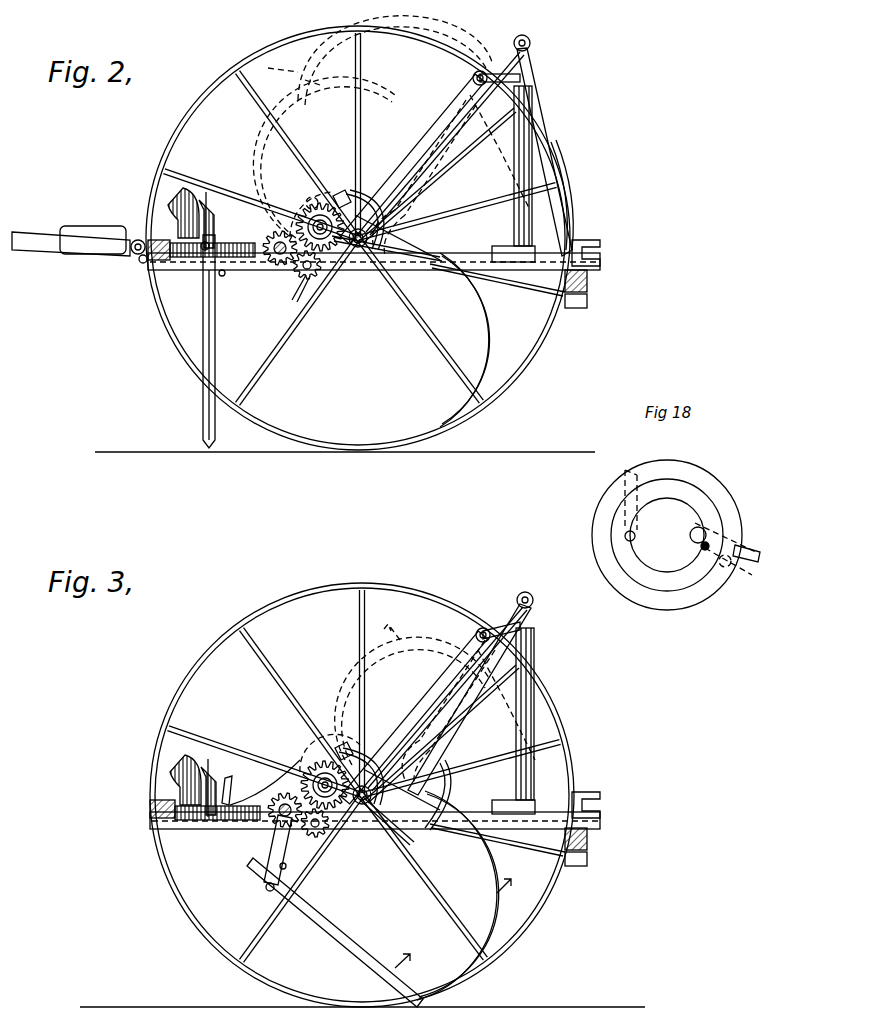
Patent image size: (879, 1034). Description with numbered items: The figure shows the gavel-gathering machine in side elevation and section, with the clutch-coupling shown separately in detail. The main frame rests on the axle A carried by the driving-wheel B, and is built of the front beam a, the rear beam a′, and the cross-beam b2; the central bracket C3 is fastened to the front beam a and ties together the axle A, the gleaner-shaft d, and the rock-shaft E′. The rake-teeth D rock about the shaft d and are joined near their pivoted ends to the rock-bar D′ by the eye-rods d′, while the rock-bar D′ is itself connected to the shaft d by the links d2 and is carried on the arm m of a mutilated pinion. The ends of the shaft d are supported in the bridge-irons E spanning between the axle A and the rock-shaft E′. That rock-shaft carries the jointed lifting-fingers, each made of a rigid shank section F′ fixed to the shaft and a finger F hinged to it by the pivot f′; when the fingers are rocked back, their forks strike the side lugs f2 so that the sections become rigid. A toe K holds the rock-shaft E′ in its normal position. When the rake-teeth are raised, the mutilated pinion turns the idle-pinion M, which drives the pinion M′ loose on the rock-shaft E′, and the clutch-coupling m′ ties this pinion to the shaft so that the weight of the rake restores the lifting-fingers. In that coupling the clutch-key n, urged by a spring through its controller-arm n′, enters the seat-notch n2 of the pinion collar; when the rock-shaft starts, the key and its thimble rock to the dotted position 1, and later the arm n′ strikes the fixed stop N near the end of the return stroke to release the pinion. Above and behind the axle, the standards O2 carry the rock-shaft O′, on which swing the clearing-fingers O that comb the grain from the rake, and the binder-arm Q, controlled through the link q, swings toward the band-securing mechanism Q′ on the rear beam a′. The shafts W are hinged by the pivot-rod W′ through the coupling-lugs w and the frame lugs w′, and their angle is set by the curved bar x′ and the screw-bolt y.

In FIG. 2, the driving-wheel B is at (358, 231).
In FIG. 3, the driving-wheel B is at (362, 787).
In FIG. 2, the shaft d is at (320, 227).
In FIG. 3, the shaft d is at (318, 785).
In FIG. 2, the shank section F′ is at (273, 248).
In FIG. 3, the shank section F′ is at (282, 829).
In FIG. 2, the rock-shaft E′ is at (294, 276).
In FIG. 3, the rock-shaft E′ is at (286, 835).
In FIG. 2, the idle-pinion M is at (301, 292).
In FIG. 3, the idle-pinion M is at (217, 818).
In FIG. 2, the pinion M′ is at (215, 234).
In FIG. 2, the cross-beam b2 is at (374, 267).
In FIG. 3, the cross-beam b2 is at (375, 823).
In FIG. 2, the front beam a is at (162, 239).
In FIG. 3, the front beam a is at (154, 809).
In FIG. 2, the rear beam a′ is at (517, 286).
In FIG. 3, the rear beam a′ is at (520, 845).
In FIG. 2, the shafts W is at (71, 233).
In FIG. 2, the pivot-rod W′ is at (103, 233).
In FIG. 2, the coupling-lugs w is at (133, 243).
In FIG. 2, the double lugs w′ is at (143, 263).
In FIG. 2, the finger F is at (197, 341).
In FIG. 3, the finger F is at (335, 932).
In FIG. 2, the pivot f′ is at (210, 244).
In FIG. 3, the pivot f′ is at (266, 888).
In FIG. 2, the side lugs f2 is at (224, 276).
In FIG. 3, the side lugs f2 is at (289, 874).
In FIG. 2, the curved bar x′ is at (186, 218).
In FIG. 3, the curved bar x′ is at (188, 785).
In FIG. 2, the screw-bolt y is at (202, 221).
In FIG. 3, the screw-bolt y is at (204, 787).
In FIG. 2, the rock-shaft O′ is at (532, 35).
In FIG. 3, the rock-shaft O′ is at (535, 597).
In FIG. 2, the link q is at (496, 63).
In FIG. 3, the link q is at (498, 623).
In FIG. 2, the standards O2 is at (513, 174).
In FIG. 3, the standards O2 is at (523, 721).
In FIG. 2, the swinging fingers O is at (544, 152).
In FIG. 3, the swinging fingers O is at (469, 699).
In FIG. 2, the link bar l′ is at (432, 148).
In FIG. 3, the link bar l′ is at (433, 705).
In FIG. 2, the binder-arm Q is at (567, 195).
In FIG. 3, the binder-arm Q is at (430, 795).
In FIG. 2, the band-securing mechanism Q′ is at (587, 244).
In FIG. 3, the band-securing mechanism Q′ is at (596, 804).
In FIG. 2, the rake-teeth D is at (473, 340).
In FIG. 3, the rake-teeth D is at (453, 895).
In FIG. 2, the rock-bar D′ is at (365, 210).
In FIG. 3, the rock-bar D′ is at (360, 753).
In FIG. 2, the arm m is at (343, 206).
In FIG. 3, the arm m is at (339, 759).
In FIG. 2, the eye-rods d′ is at (397, 228).
In FIG. 3, the eye-rods d′ is at (402, 780).
In FIG. 2, the links d2 is at (314, 193).
In FIG. 3, the links d2 is at (328, 747).
In FIG. 2, the bracket C3 is at (299, 210).
In FIG. 3, the bracket C3 is at (265, 782).
In FIG. 2, the axle A is at (387, 248).
In FIG. 3, the axle A is at (387, 829).
In FIG. 3, the bridge-irons E is at (278, 850).
In FIG. 3, the toe K is at (231, 784).
In FIG. 18, the clutch-coupling m′ is at (671, 535).
In FIG. 18, the controller-arm n′ is at (693, 520).
In FIG. 18, the fixed stop N is at (731, 566).
In FIG. 18, the inner ring 1 is at (652, 535).
In FIG. 18, the clutch-key n is at (691, 534).
In FIG. 18, the seat-notch n2 is at (702, 548).